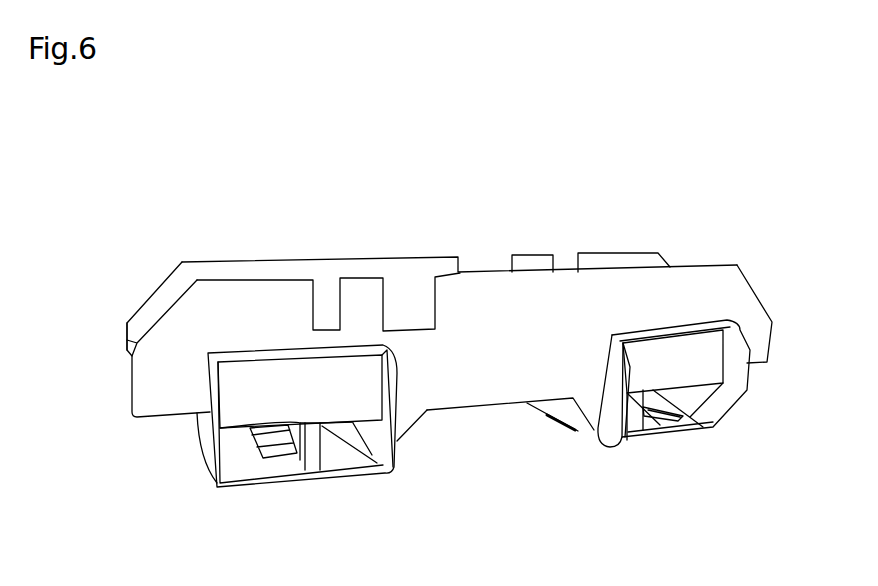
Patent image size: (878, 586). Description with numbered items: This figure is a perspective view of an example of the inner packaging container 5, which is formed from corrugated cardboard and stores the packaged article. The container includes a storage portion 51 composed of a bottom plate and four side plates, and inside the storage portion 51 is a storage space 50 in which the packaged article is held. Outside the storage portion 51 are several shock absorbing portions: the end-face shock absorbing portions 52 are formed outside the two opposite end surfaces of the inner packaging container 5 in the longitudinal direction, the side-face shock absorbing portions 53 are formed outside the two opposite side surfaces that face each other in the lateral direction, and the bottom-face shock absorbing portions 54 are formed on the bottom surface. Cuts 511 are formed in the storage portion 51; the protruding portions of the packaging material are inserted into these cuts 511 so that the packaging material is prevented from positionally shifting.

The inner packaging container 5 is at (721, 158).
The storage space 50 is at (499, 262).
The storage portion 51 is at (341, 246).
The cuts 511 is at (315, 298).
The end-face shock absorbing portions 52 is at (741, 254).
The side-face shock absorbing portions 53 is at (413, 389).
The bottom-face shock absorbing portions 54 is at (353, 482).